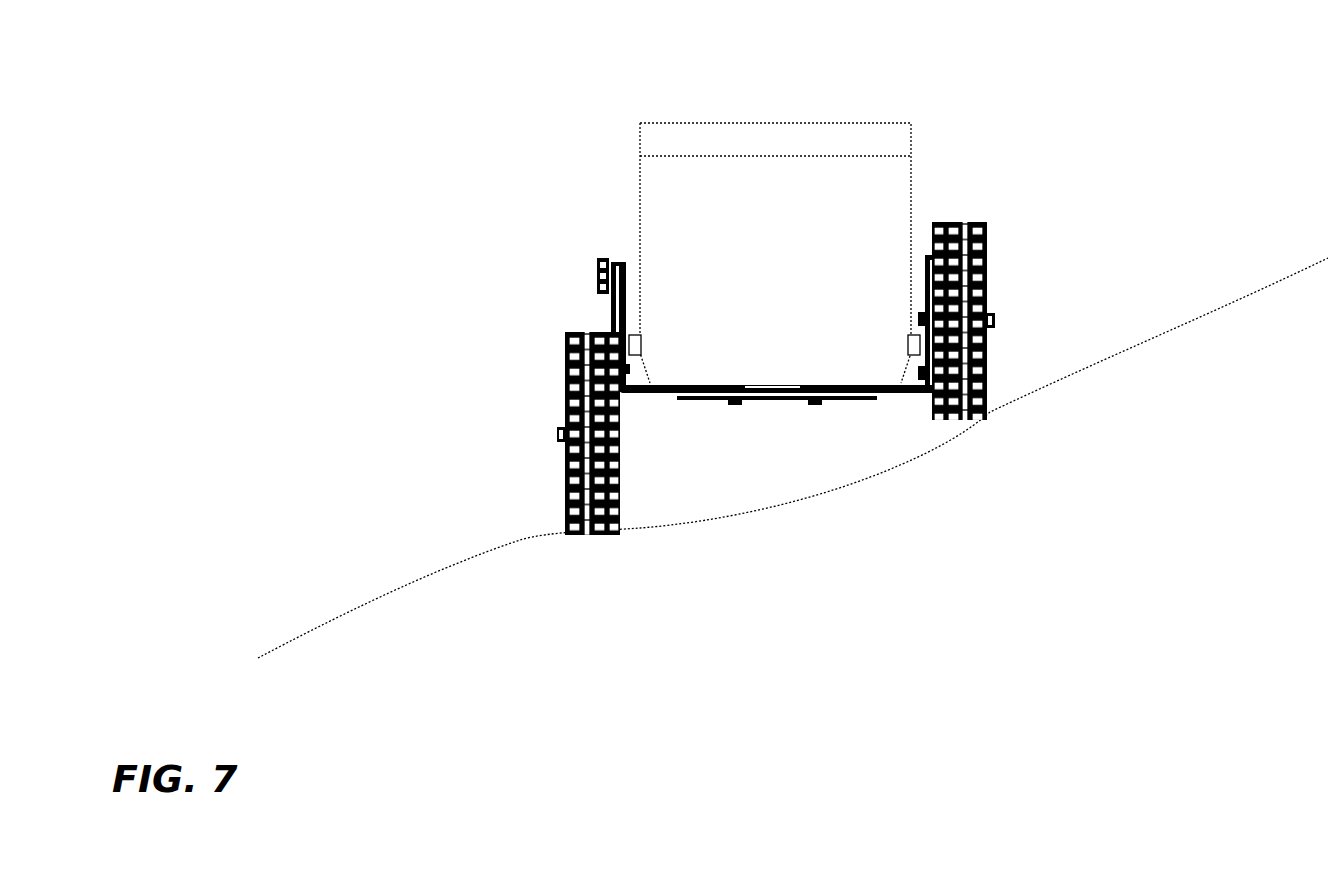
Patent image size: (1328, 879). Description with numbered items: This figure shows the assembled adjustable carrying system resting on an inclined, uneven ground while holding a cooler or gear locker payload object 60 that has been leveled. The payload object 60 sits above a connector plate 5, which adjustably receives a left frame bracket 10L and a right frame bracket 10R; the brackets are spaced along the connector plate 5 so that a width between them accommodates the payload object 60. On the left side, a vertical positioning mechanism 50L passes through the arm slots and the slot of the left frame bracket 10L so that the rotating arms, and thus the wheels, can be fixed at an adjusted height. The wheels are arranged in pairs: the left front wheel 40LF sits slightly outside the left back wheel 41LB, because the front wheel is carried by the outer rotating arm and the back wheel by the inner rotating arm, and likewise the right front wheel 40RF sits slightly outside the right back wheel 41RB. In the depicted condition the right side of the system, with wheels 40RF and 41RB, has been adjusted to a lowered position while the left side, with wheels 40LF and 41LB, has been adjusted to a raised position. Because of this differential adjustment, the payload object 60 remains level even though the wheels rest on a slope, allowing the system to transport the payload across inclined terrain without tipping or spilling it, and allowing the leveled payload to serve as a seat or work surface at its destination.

The payload object 60 is at (784, 130).
The connector plate 5 is at (776, 398).
The left frame bracket 10L is at (660, 400).
The right frame bracket 10R is at (912, 405).
The left vertical positioning mechanism 50L is at (597, 277).
The left front wheel 40LF is at (565, 377).
The left back wheel 41LB is at (620, 500).
The right front wheel 40RF is at (990, 263).
The right back wheel 41RB is at (933, 220).